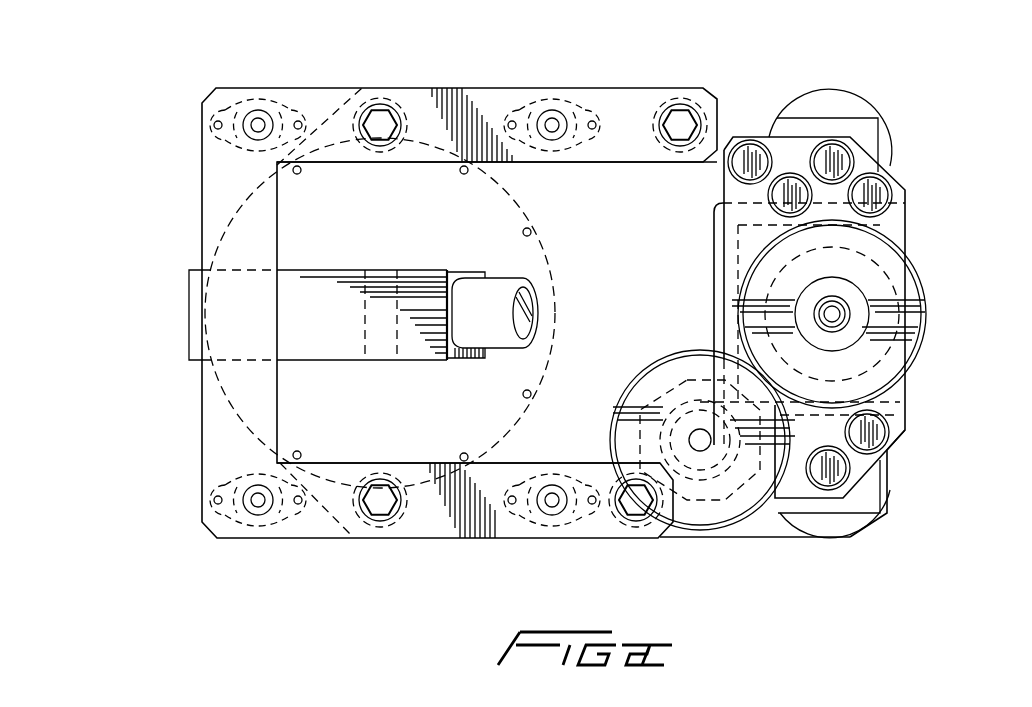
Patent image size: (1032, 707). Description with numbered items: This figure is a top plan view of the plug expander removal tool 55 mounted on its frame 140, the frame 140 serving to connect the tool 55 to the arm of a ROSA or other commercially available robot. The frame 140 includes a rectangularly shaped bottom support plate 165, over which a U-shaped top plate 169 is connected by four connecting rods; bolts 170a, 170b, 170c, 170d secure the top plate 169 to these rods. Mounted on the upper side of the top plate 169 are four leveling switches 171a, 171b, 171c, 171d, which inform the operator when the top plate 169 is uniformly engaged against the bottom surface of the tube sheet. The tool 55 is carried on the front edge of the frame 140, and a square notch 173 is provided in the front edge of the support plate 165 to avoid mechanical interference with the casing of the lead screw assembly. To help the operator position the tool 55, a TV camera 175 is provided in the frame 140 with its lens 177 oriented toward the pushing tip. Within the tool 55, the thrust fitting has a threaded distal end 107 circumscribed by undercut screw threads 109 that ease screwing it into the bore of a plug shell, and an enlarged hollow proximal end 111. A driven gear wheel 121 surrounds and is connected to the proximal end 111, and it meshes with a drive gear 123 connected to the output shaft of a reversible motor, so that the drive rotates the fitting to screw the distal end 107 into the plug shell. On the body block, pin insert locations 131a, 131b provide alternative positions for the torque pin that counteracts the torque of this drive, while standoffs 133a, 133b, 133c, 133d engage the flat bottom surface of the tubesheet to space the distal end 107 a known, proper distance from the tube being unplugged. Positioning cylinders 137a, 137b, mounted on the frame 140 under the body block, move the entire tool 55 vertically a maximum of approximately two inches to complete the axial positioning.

The frame 140 is at (199, 178).
The bottom support plate 165 is at (625, 323).
The U-shaped top plate 169 is at (466, 95).
The bolt 170a is at (382, 505).
The bolt 170b is at (627, 503).
The bolt 170c is at (680, 118).
The bolt 170d is at (380, 115).
The leveling switch 171a is at (258, 528).
The leveling switch 171b is at (552, 525).
The leveling switch 171c is at (552, 97).
The leveling switch 171d is at (262, 97).
The square notch 173 is at (713, 255).
The TV camera 175 is at (325, 314).
The lens 177 is at (501, 303).
The plug expander removal tool 55 is at (952, 267).
The threaded distal end 107 is at (845, 307).
The screw threads 109 is at (847, 327).
The enlarged hollow proximal end 111 is at (870, 315).
The driven gear wheel 121 is at (900, 380).
The drive gear 123 is at (742, 510).
The pin insert location 131a is at (748, 155).
The pin insert location 131b is at (848, 467).
The standoff 133a is at (792, 185).
The standoff 133b is at (883, 432).
The standoff 133c is at (840, 150).
The standoff 133d is at (875, 195).
The positioning cylinder 137a is at (843, 108).
The positioning cylinder 137b is at (845, 522).